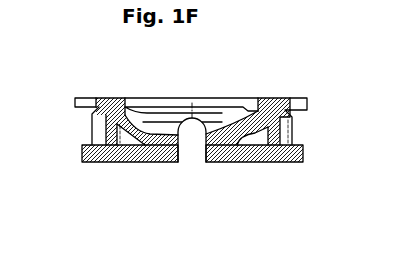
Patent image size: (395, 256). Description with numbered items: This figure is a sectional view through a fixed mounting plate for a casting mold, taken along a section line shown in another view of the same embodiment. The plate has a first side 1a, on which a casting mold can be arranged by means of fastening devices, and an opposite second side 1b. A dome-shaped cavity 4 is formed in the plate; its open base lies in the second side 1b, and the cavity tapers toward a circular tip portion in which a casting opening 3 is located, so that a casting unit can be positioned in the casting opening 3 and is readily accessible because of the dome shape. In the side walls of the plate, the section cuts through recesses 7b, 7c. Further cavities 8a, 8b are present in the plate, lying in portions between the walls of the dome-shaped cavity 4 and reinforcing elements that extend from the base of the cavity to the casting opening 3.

The first side 1a is at (122, 152).
The second side 1b is at (109, 98).
The casting opening 3 is at (190, 163).
The dome-shaped cavity 4 is at (220, 123).
The recess 7b is at (300, 132).
The recess 7c is at (91, 130).
The further cavity 8a is at (128, 133).
The further cavity 8b is at (250, 130).